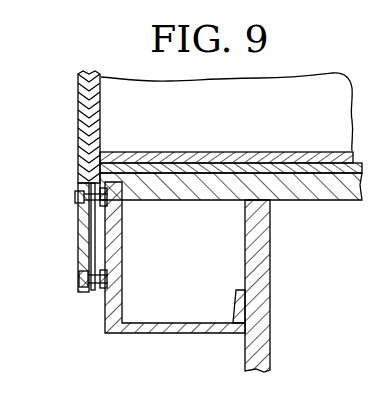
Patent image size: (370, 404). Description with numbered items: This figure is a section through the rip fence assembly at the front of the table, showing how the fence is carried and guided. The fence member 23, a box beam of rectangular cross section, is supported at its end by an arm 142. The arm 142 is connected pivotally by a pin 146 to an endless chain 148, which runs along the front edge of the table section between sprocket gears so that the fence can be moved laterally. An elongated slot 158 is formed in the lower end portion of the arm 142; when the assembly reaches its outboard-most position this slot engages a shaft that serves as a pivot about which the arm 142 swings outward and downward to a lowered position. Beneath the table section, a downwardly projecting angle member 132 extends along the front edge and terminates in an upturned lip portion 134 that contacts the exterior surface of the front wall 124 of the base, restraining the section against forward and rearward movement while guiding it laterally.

The fence member 23 is at (244, 131).
The arm 142 is at (78, 150).
The pin 146 is at (75, 198).
The endless chain 148 is at (92, 213).
The elongated slot 158 is at (80, 250).
The angle member 132 is at (166, 333).
The upturned lip portion 134 is at (241, 290).
The front wall 124 is at (272, 258).